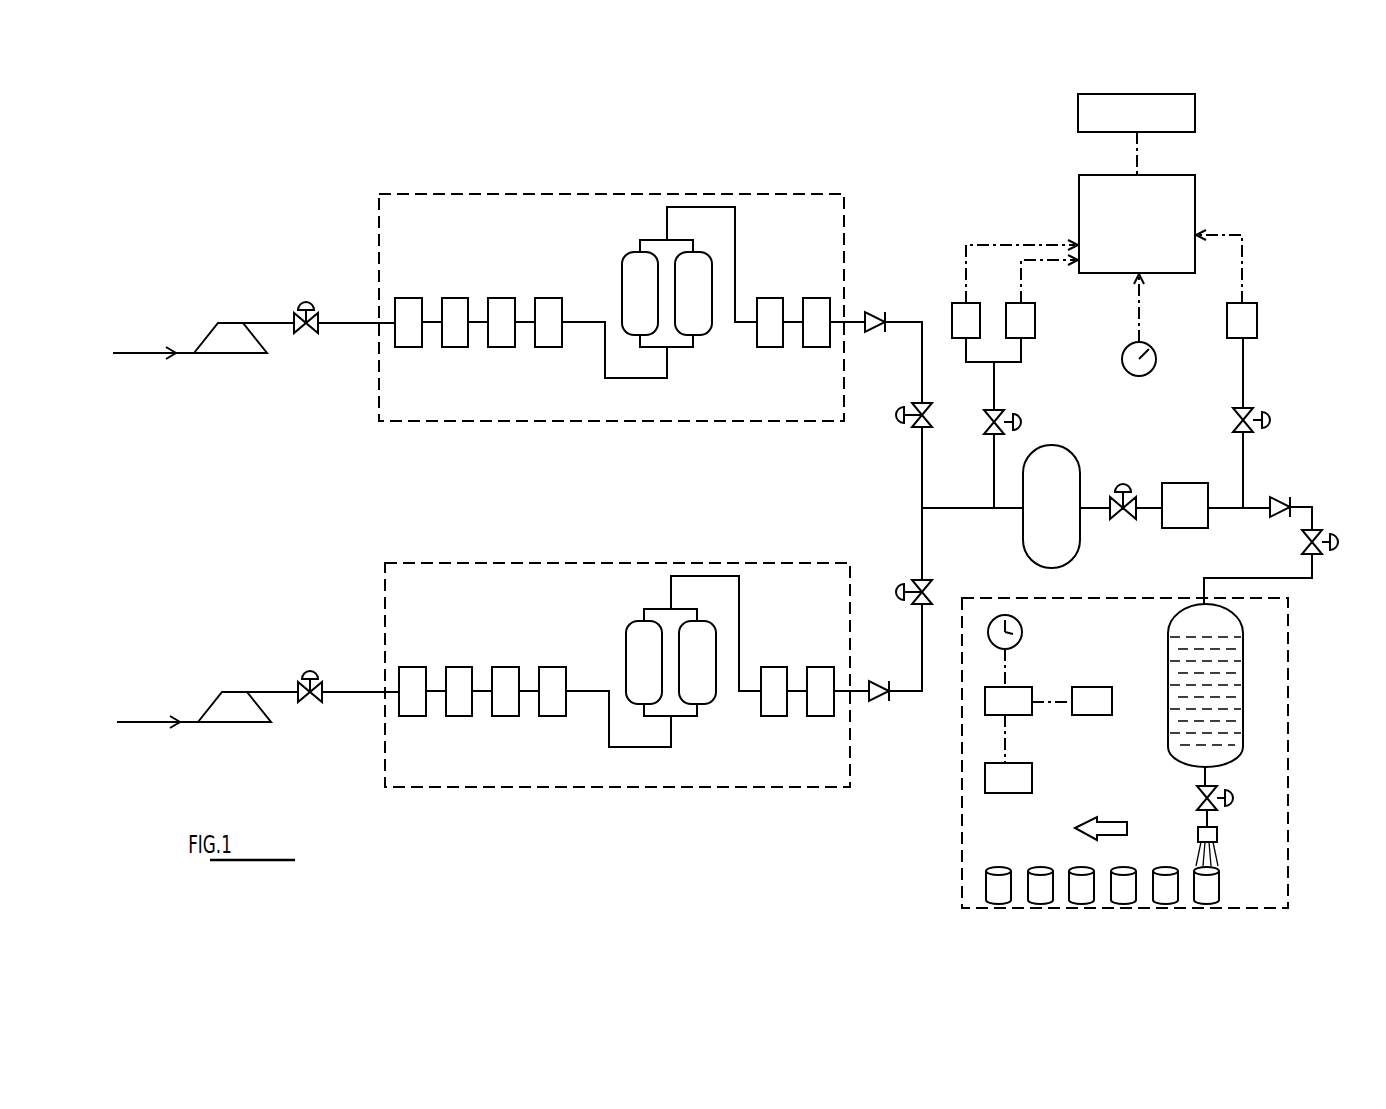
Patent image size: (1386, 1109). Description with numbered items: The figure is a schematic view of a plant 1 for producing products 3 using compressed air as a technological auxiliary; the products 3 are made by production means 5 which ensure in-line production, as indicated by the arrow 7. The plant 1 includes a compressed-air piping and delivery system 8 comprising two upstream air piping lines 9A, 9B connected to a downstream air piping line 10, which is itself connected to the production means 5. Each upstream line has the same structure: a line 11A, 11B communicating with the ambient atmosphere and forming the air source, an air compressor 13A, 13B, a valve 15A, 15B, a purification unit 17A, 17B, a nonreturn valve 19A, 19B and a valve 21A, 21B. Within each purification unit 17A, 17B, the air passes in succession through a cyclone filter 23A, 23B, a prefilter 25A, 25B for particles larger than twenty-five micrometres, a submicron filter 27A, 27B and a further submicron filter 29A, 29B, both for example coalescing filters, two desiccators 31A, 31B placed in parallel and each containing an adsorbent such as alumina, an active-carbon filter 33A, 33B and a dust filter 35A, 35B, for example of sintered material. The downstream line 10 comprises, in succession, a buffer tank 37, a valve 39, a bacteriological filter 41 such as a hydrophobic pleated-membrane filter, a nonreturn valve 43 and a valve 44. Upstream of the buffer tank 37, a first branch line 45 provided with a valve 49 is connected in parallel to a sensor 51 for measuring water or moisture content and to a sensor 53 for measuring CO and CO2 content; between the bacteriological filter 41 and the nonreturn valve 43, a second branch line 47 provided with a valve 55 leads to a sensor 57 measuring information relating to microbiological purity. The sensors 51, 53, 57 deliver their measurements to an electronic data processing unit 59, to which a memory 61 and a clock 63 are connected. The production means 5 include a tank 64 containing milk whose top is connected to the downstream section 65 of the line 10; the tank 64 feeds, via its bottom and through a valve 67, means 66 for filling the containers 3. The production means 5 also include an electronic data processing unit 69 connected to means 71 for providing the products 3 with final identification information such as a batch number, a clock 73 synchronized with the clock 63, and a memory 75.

The plant 1 is at (966, 154).
The products 3 is at (1040, 868).
The production means 5 is at (1296, 778).
The arrow 7 is at (1120, 818).
The compressed-air piping and delivery system 8 is at (900, 300).
The upstream air piping line 9A is at (760, 806).
The upstream air piping line 9B is at (754, 178).
The downstream air piping line 10 is at (961, 511).
The line for communication with the ambient atmosphere 11A is at (185, 725).
The line for communication with the ambient atmosphere 11B is at (185, 356).
The air compressor 13A is at (240, 725).
The air compressor 13B is at (240, 356).
The valve 15A is at (314, 704).
The valve 15B is at (311, 335).
The purification unit 17A is at (627, 790).
The purification unit 17B is at (621, 424).
The nonreturn valve 19A is at (880, 702).
The nonreturn valve 19B is at (878, 334).
The valve 21A is at (906, 588).
The valve 21B is at (907, 421).
The cyclone filter 23A is at (412, 717).
The cyclone filter 23B is at (409, 348).
The prefilter 25A is at (459, 667).
The prefilter 25B is at (455, 298).
The submicron filter 27A is at (506, 717).
The submicron filter 27B is at (503, 348).
The submicron filter 29A is at (553, 667).
The submicron filter 29B is at (549, 298).
The desiccators 31A is at (632, 626).
The desiccators 31B is at (628, 257).
The active-carbon filter 33A is at (774, 717).
The active-carbon filter 33B is at (771, 348).
The dust filter 35A is at (821, 667).
The dust filter 35B is at (817, 298).
The buffer tank 37 is at (1082, 458).
The valve 39 is at (1123, 520).
The bacteriological filter 41 is at (1183, 529).
The nonreturn valve 43 is at (1280, 497).
The valve 44 is at (1322, 555).
The first branch line 45 is at (997, 387).
The second branch line 47 is at (1251, 378).
The valve 49 is at (1022, 422).
The sensor for measuring the water or moisture content 51 is at (1014, 301).
The sensor for measuring the CO and CO2 content 53 is at (1036, 308).
The valve 55 is at (1272, 420).
The sensor for measuring microbiological purity 57 is at (1226, 284).
The electronic data processing unit 59 is at (1137, 224).
The memory 61 is at (1136, 134).
The clock 63 is at (1153, 366).
The tank 64 is at (1244, 690).
The downstream section 65 is at (1268, 578).
The filling means 66 is at (1217, 835).
The valve 67 is at (1197, 800).
The electronic data processing unit 69 is at (1030, 715).
The means for providing final identification information 71 is at (1032, 777).
The clock 73 is at (1023, 632).
The memory 75 is at (1112, 700).